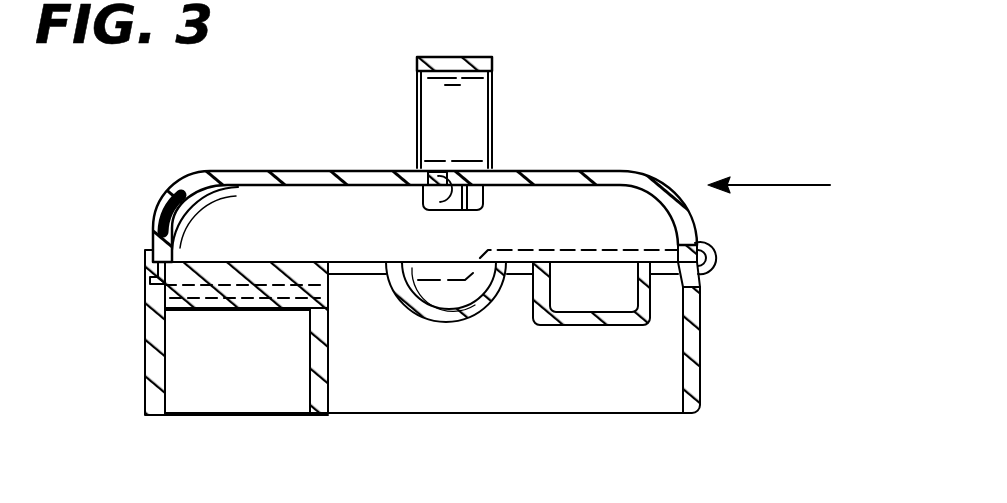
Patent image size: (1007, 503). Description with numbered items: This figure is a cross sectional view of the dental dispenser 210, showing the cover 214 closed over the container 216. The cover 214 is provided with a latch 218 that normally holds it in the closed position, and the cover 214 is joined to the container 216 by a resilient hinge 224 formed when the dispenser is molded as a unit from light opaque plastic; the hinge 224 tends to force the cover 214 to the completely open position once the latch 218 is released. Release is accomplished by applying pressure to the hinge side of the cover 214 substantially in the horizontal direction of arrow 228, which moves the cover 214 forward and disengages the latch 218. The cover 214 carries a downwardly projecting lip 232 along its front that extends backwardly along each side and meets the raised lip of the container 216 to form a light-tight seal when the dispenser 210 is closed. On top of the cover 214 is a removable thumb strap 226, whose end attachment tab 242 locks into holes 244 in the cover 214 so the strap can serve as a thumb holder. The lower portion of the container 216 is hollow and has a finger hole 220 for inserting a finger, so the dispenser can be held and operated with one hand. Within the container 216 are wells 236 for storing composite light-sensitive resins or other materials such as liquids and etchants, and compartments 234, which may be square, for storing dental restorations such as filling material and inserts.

The dental dispenser 210 is at (580, 171).
The cover 214 is at (683, 148).
The container 216 is at (700, 365).
The latch 218 is at (148, 300).
The finger hole 220 is at (318, 390).
The resilient hinge 224 is at (716, 262).
The thumb strap 226 is at (496, 62).
The arrow 228 is at (762, 185).
The downwardly projecting lip 232 is at (148, 268).
The compartments 234 is at (589, 305).
The wells 236 is at (441, 308).
The attachment tab 242 is at (488, 196).
The holes 244 is at (432, 204).